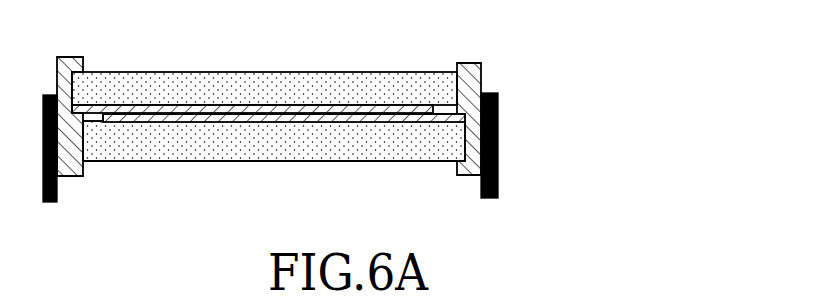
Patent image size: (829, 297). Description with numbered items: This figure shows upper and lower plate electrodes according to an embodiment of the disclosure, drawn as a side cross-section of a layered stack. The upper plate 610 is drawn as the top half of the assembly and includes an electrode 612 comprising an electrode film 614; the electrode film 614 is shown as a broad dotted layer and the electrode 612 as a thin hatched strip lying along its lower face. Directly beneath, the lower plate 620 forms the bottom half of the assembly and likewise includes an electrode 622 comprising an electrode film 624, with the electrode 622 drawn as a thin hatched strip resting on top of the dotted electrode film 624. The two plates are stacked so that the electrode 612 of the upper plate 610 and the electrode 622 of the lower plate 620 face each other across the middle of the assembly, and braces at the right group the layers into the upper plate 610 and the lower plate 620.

The upper plate 610 is at (393, 69).
The electrode 612 is at (140, 107).
The electrode film 614 is at (323, 85).
The lower plate 620 is at (402, 176).
The electrode 622 is at (284, 176).
The electrode film 624 is at (350, 142).